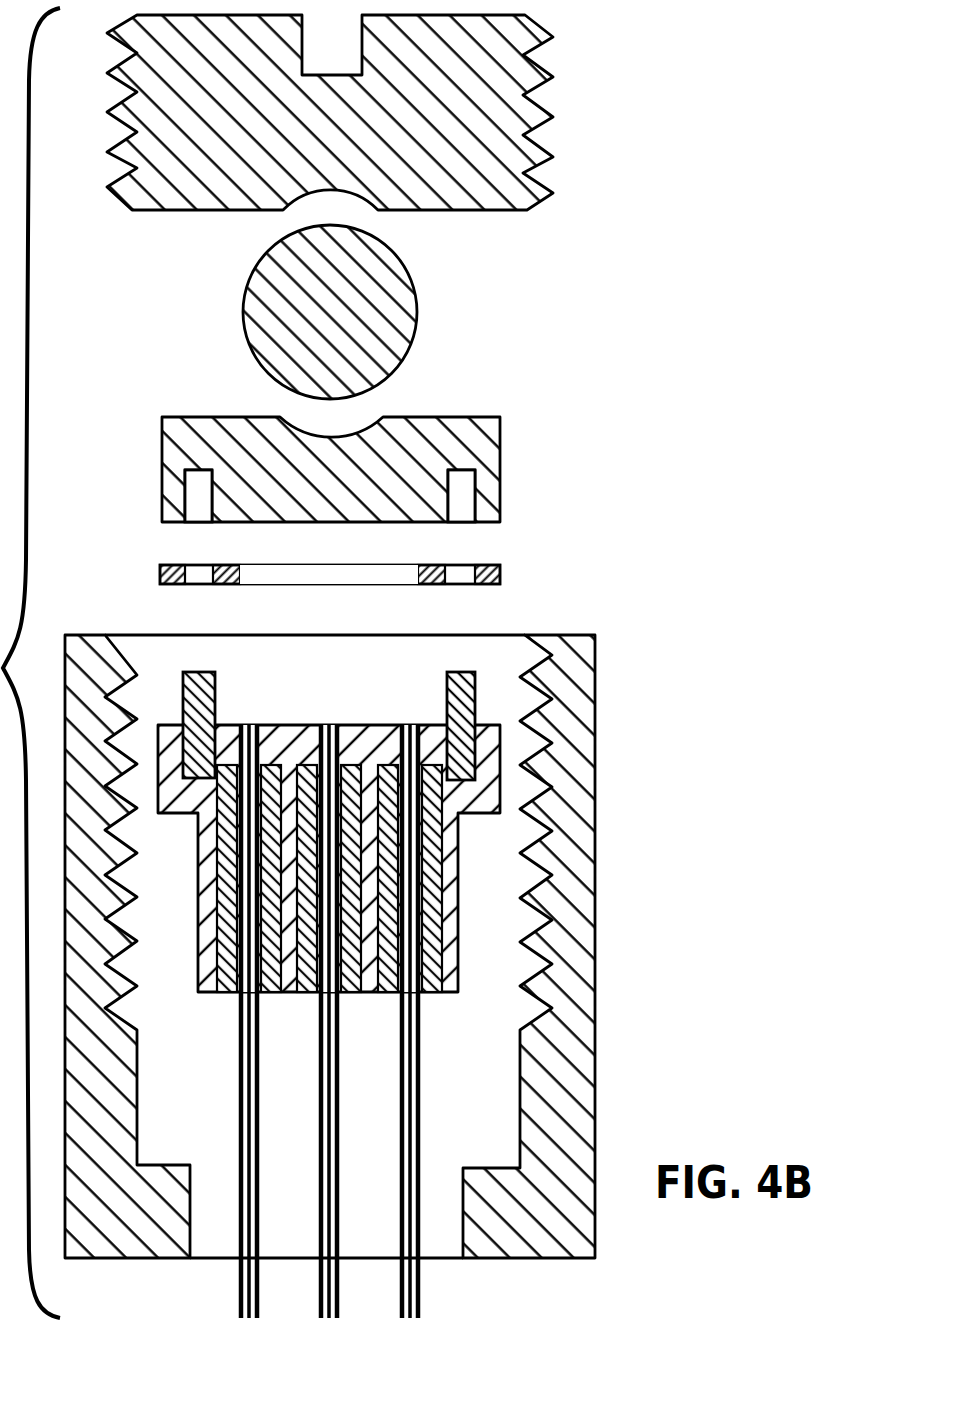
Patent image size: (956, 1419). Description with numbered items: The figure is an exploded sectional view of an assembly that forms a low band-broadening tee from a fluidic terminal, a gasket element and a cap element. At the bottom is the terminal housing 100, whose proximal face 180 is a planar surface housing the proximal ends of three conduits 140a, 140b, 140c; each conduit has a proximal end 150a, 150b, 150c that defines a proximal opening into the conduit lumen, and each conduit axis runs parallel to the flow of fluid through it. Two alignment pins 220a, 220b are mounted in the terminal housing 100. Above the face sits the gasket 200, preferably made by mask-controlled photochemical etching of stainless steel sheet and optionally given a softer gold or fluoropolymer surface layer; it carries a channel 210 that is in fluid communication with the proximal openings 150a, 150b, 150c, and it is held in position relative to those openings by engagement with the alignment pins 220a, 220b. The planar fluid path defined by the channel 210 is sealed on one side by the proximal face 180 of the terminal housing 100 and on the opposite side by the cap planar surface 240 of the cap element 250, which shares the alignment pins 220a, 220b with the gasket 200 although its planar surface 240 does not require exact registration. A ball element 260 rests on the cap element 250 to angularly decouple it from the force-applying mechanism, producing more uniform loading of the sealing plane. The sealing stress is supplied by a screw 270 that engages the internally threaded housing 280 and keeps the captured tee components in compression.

The terminal housing 100 is at (458, 908).
The conduit 140a is at (237, 1045).
The conduit 140b is at (340, 1047).
The conduit 140c is at (421, 1283).
The proximal end 150a is at (250, 723).
The proximal end 150b is at (334, 722).
The proximal end 150c is at (416, 724).
The proximal face 180 is at (366, 724).
The gasket 200 is at (500, 574).
The channel 210 is at (397, 577).
The alignment pin 220a is at (182, 708).
The alignment pin 220b is at (477, 695).
The cap planar surface 240 is at (430, 522).
The cap element 250 is at (458, 417).
The ball element 260 is at (408, 268).
The screw 270 is at (553, 205).
The housing 280 is at (595, 838).